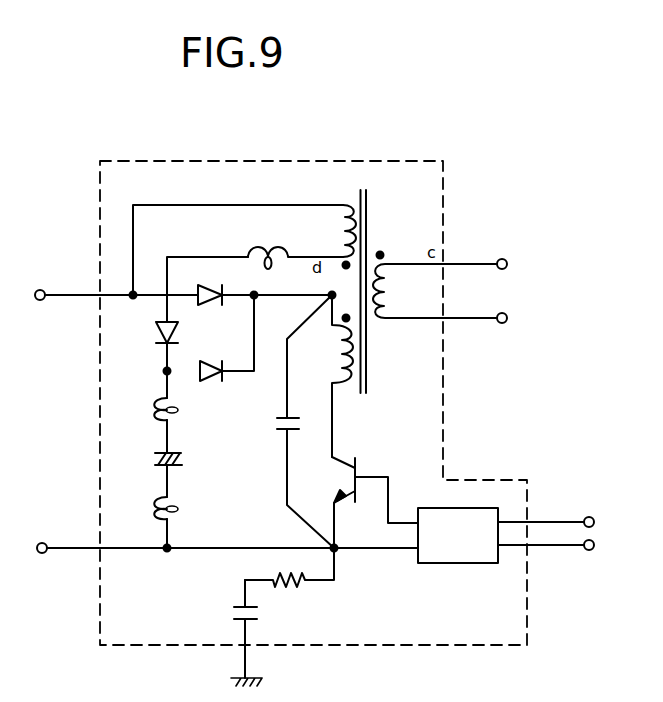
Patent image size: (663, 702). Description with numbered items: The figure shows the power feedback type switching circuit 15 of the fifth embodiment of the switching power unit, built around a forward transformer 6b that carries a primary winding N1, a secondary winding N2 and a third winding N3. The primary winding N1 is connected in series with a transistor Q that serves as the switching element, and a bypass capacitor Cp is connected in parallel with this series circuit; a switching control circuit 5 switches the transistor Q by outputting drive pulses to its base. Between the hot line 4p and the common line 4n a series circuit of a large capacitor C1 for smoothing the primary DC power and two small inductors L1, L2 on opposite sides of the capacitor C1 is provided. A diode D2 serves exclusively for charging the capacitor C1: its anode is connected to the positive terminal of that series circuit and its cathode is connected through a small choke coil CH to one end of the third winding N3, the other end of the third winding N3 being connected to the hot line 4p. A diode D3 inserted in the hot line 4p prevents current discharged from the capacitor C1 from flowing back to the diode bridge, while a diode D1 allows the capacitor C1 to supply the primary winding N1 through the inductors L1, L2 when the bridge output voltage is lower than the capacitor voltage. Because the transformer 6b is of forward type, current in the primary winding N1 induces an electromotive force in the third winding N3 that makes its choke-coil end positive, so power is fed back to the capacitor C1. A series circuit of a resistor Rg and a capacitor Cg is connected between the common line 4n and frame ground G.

The switching circuit 15 is at (276, 158).
The forward transformer 6b is at (368, 200).
The hot line 4p is at (76, 294).
The common line 4n is at (76, 549).
The switching control circuit 5 is at (460, 563).
The choke coil CH is at (285, 242).
The primary winding N1 is at (323, 376).
The secondary winding N2 is at (440, 288).
The third winding N3 is at (325, 237).
The diode D1 is at (213, 387).
The diode D2 is at (144, 335).
The diode D3 is at (209, 314).
The inductor L1 is at (146, 410).
The inductor L2 is at (147, 510).
The capacitor C1 is at (146, 462).
The bypass capacitor Cp is at (288, 421).
The transistor Q is at (365, 502).
The resistor Rg is at (289, 583).
The capacitor Cg is at (228, 629).
The frame ground G is at (258, 676).